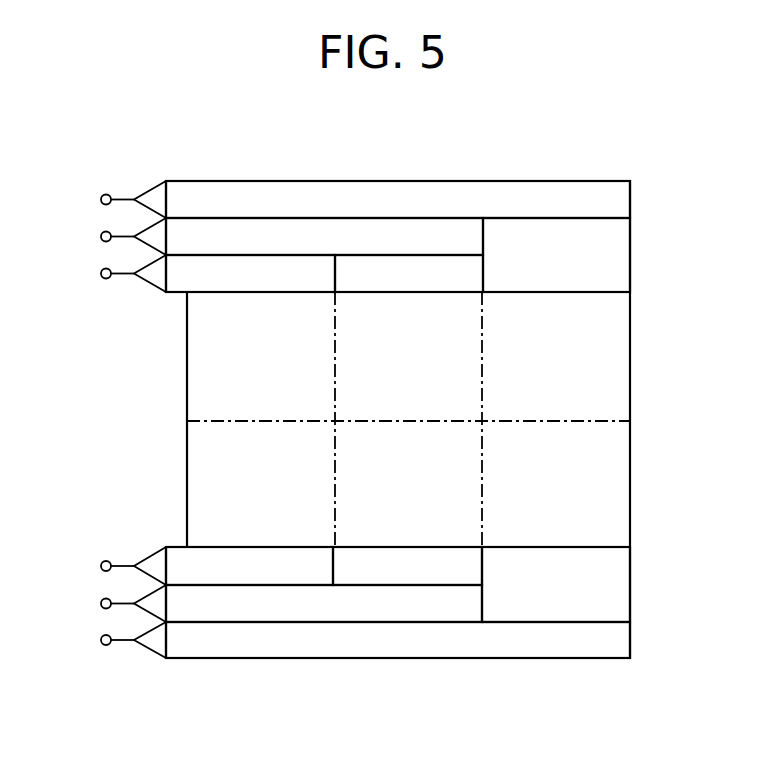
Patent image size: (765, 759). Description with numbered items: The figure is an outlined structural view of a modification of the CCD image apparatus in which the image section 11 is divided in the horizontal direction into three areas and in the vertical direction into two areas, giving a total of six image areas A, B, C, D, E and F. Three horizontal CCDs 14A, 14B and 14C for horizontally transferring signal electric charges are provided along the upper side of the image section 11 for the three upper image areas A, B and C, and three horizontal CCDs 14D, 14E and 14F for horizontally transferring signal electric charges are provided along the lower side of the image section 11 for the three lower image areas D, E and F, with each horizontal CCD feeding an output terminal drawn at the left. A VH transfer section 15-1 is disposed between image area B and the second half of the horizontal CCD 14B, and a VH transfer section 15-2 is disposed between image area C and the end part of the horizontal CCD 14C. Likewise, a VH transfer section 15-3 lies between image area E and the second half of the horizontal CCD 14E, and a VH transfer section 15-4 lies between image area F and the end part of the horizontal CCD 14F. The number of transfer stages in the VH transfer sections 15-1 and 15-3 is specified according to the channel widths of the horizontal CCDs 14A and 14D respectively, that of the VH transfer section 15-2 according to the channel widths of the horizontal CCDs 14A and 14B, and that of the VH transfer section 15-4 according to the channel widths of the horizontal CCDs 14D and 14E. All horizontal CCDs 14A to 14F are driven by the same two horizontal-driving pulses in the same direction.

The image section 11 is at (634, 374).
The horizontal CCD 14A is at (243, 272).
The horizontal CCD 14B is at (407, 235).
The horizontal CCD 14C is at (558, 197).
The horizontal CCD 14D is at (282, 570).
The horizontal CCD 14E is at (448, 608).
The horizontal CCD 14F is at (557, 638).
The VH transfer section 15-1 is at (409, 270).
The VH transfer section 15-2 is at (557, 270).
The VH transfer section 15-3 is at (405, 565).
The VH transfer section 15-4 is at (557, 565).